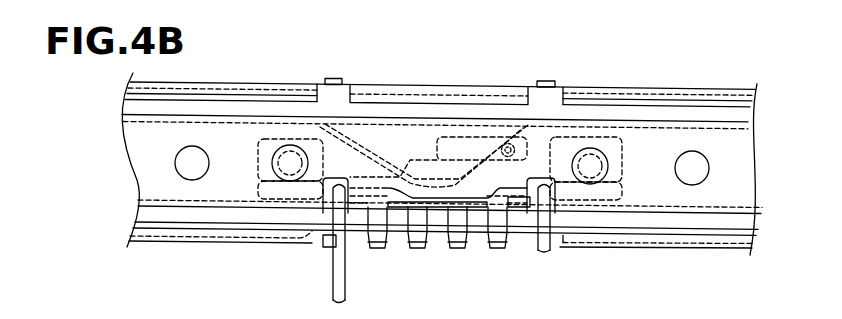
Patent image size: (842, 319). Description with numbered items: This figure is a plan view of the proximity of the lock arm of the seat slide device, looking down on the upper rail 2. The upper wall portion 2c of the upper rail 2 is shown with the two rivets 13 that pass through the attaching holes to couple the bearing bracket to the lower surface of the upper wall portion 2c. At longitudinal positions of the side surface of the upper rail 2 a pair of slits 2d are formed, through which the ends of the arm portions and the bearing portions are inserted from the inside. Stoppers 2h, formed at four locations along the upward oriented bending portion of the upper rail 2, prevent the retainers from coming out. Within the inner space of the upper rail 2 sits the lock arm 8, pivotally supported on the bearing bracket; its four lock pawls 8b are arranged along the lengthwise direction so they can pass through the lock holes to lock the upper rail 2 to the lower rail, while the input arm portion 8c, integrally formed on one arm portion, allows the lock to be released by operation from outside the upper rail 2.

The upper rail 2 is at (142, 158).
The upper wall portion 2c is at (738, 175).
The slits 2d is at (341, 178).
The stoppers 2h is at (334, 79).
The lock arm 8 is at (496, 186).
The lock pawls 8b is at (457, 248).
The input arm portion 8c is at (333, 278).
The rivets 13 is at (290, 160).